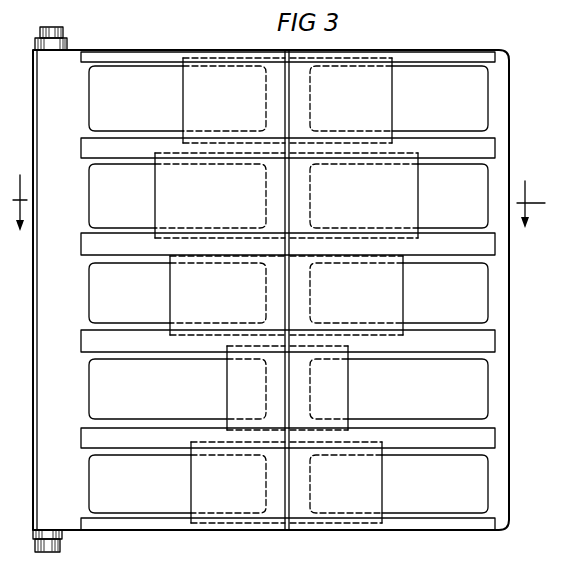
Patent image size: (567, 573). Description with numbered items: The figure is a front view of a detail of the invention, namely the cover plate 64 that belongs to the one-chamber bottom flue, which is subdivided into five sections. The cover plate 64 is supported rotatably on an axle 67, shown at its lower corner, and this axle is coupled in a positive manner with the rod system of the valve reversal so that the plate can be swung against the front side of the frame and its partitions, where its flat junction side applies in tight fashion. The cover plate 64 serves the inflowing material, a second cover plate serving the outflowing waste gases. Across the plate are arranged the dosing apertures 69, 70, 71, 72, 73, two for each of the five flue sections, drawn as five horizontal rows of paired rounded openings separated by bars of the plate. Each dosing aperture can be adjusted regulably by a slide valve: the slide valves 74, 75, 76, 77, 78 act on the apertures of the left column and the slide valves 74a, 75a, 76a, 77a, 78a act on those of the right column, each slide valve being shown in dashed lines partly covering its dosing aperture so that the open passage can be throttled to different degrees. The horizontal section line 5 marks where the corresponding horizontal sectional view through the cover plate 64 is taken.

The section line 5— 5 is at (279, 214).
The cover plate 64 is at (222, 526).
The axle 67 is at (64, 541).
The dosing aperture 69 is at (102, 492).
The dosing aperture 70 is at (98, 397).
The dosing aperture 71 is at (100, 300).
The dosing aperture 72 is at (97, 196).
The dosing aperture 73 is at (150, 78).
The slide valve 74 is at (240, 487).
The slide valve 74a is at (357, 487).
The slide valve 75 is at (258, 384).
The slide valve 75a is at (346, 384).
The slide valve 76 is at (226, 304).
The slide valve 76a is at (376, 304).
The slide valve 77 is at (214, 225).
The slide valve 77a is at (372, 225).
The slide valve 78 is at (228, 104).
The slide valve 78a is at (370, 104).